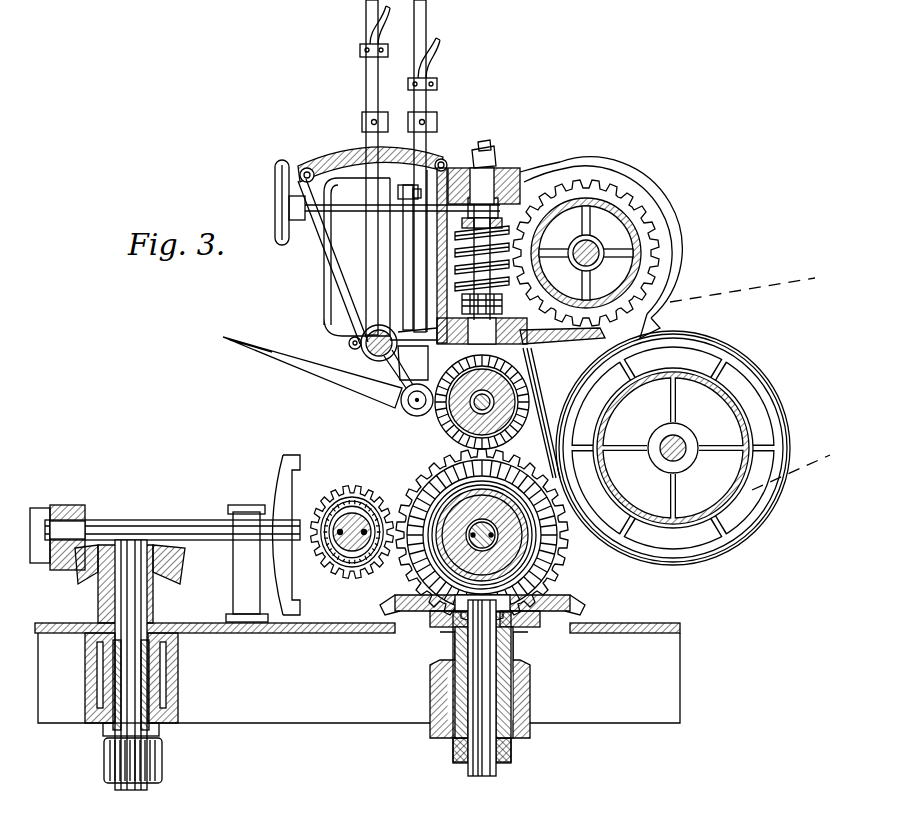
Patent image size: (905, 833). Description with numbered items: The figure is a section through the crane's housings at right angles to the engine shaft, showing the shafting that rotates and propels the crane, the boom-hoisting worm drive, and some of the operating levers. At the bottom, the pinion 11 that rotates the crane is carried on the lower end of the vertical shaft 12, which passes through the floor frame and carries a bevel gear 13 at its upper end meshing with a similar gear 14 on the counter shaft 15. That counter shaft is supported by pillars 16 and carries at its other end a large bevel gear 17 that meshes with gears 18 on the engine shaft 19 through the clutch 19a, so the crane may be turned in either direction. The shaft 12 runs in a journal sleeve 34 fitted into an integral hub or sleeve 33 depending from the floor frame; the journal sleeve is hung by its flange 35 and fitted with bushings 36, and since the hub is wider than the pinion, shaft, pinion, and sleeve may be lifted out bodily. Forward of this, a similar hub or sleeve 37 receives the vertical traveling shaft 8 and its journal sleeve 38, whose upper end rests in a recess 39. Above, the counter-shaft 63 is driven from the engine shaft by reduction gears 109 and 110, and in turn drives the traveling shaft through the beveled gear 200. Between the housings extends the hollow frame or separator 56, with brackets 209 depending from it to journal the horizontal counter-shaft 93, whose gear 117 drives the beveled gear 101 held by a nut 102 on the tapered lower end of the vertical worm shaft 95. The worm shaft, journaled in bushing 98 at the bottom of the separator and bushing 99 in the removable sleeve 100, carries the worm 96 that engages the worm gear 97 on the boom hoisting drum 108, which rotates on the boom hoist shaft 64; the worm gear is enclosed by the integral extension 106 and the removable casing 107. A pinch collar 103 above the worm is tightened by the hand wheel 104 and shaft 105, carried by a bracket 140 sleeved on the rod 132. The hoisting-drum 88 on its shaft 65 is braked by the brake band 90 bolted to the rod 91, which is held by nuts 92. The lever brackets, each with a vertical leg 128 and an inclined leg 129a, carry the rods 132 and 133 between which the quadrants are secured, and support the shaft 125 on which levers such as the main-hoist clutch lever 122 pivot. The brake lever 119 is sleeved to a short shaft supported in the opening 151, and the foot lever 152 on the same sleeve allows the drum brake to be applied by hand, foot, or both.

The vertical traveling shaft 8 is at (485, 778).
The pinion 11 is at (112, 758).
The vertical shaft 12 is at (135, 672).
The bevel gear 13 is at (178, 568).
The bevel gear 14 is at (78, 508).
The counter shaft 15 is at (150, 526).
The pillars 16 is at (247, 563).
The large bevel gear 17 is at (300, 460).
The bevel gears 18 is at (350, 576).
The engine shaft 19 is at (352, 520).
The clutch 19a is at (383, 588).
The hub or sleeve 33 is at (88, 668).
The journal sleeve 34 is at (168, 650).
The flange 35 is at (172, 600).
The bushings 36 is at (160, 730).
The hub or sleeve 37 is at (530, 692).
The journal sleeve 38 is at (511, 752).
The recess 39 is at (520, 640).
The hollow frame or separator 56 is at (448, 175).
The counter-shaft 63 is at (525, 545).
The boom hoist shaft 64 is at (592, 246).
The hoisting drum shaft 65 is at (680, 440).
The hoisting-drum 88 is at (732, 478).
The brake band 90 is at (694, 338).
The rod 91 is at (537, 378).
The nuts 92 is at (484, 146).
The horizontal counter-shaft 93 is at (452, 432).
The vertical worm shaft 95 is at (440, 320).
The worm 96 is at (437, 234).
The worm gear 97 is at (662, 253).
The bushing 98 is at (580, 268).
The bushing 99 is at (505, 168).
The sleeve 100 is at (516, 190).
The beveled gear 101 is at (401, 402).
The nut 102 is at (430, 418).
The pinch collar 103 is at (540, 178).
The hand wheel 104 is at (280, 215).
The shaft 105 is at (362, 206).
The integral extension 106 is at (586, 166).
The removable casing 107 is at (660, 216).
The drum 108 is at (610, 232).
The reduction gear 109 is at (372, 505).
The reduction gear 110 is at (455, 492).
The gear 117 is at (508, 428).
The lever 119 is at (427, 32).
The lever 122 is at (366, 86).
The shaft 125 is at (349, 342).
The vertical leg 128 is at (424, 260).
The inclined leg 129a is at (342, 285).
The rod 132 is at (307, 170).
The rod 133 is at (441, 160).
The bracket 140 is at (327, 240).
The opening 151 is at (404, 412).
The lever 152 is at (312, 372).
The beveled gear 200 is at (545, 598).
The brackets 209 is at (403, 450).